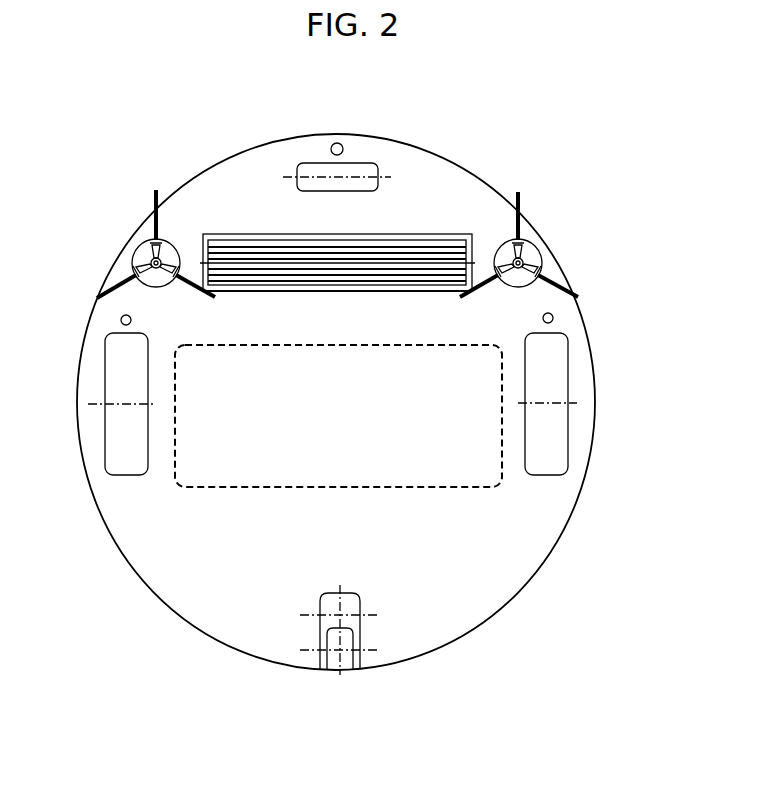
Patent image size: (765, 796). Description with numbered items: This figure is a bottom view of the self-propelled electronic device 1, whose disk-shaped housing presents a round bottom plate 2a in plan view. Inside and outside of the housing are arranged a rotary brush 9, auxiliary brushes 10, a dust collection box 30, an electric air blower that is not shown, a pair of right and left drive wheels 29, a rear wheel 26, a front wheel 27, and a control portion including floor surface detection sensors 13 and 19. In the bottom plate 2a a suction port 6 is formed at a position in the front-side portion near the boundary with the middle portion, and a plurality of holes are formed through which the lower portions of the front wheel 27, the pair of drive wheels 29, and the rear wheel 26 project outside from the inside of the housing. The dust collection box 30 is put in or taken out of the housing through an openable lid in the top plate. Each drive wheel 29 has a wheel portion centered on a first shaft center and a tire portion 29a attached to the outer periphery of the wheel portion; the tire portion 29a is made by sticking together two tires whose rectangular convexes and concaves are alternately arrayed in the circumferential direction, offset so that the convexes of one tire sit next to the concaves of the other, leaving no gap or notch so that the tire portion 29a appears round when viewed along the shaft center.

The self-propelled electronic device 1 is at (550, 126).
The bottom plate 2a is at (457, 623).
The suction port 6 is at (405, 234).
The rotary brush 9 is at (334, 291).
The auxiliary brushes 10 is at (157, 198).
The floor surface detection sensor 13 is at (338, 143).
The floor surface detection sensor 19 is at (121, 320).
The rear wheel 26 is at (346, 672).
The front wheel 27 is at (375, 163).
The drive wheels 29 is at (130, 475).
The tire portion 29a is at (130, 407).
The dust collection box 30 is at (318, 487).